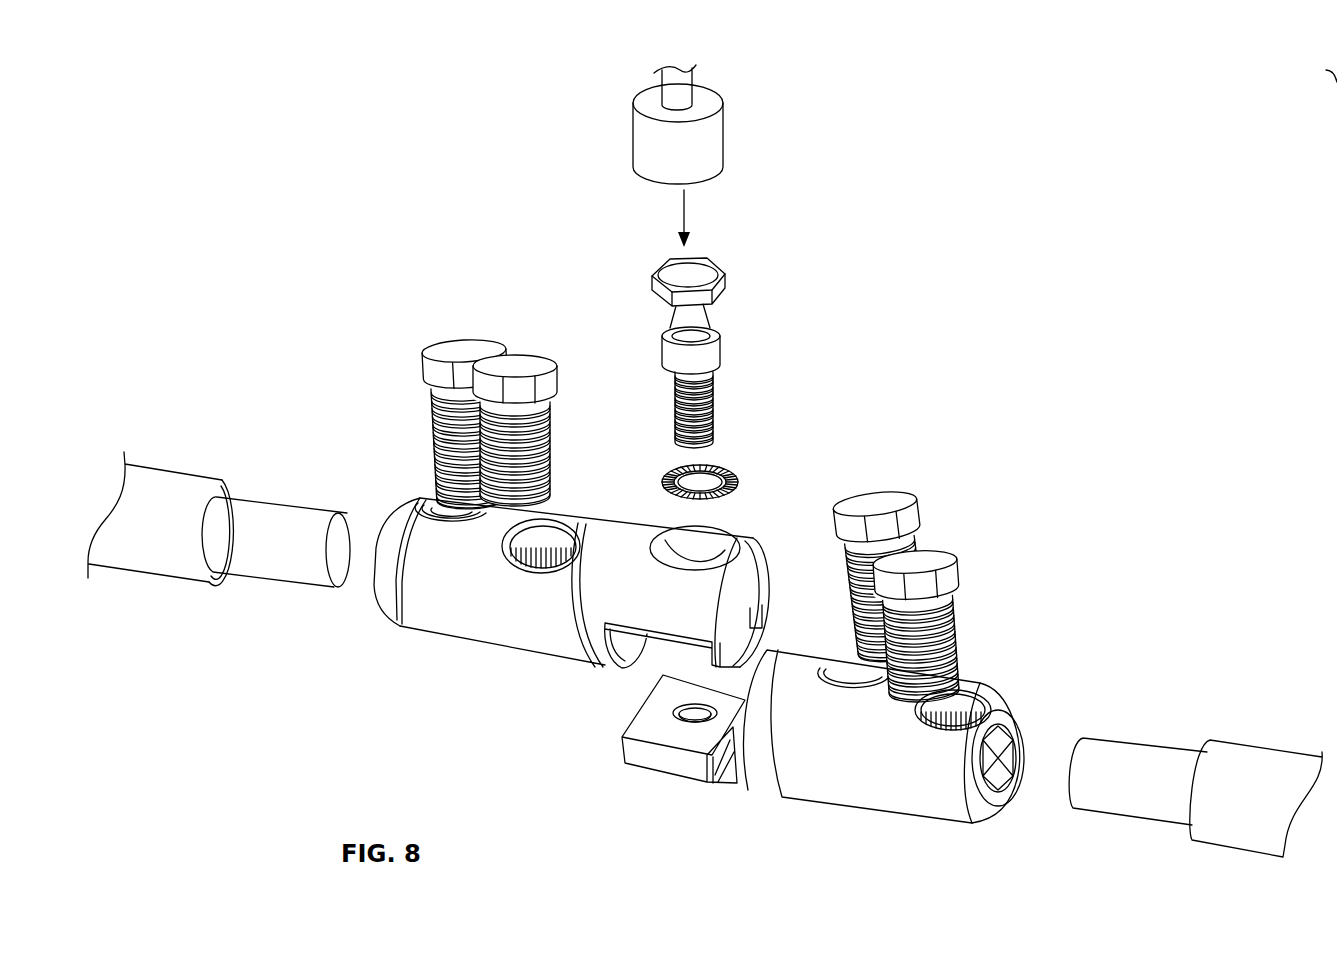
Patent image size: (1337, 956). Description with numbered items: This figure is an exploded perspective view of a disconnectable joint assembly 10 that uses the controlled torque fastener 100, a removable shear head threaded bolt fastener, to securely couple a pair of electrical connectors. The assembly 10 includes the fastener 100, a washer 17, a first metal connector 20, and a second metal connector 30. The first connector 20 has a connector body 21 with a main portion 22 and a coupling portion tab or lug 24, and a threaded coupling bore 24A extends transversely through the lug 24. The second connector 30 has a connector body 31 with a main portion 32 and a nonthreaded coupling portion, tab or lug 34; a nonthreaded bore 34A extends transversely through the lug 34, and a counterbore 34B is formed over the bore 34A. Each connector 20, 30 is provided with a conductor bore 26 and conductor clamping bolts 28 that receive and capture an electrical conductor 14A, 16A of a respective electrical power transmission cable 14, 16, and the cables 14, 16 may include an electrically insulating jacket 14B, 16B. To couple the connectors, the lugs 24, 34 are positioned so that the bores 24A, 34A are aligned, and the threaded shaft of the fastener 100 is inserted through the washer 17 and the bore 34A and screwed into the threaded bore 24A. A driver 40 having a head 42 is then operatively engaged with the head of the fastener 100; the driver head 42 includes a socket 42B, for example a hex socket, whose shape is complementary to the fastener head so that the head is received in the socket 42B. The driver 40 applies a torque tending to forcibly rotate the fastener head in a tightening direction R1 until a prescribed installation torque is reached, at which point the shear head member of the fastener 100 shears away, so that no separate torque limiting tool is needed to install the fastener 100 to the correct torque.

The disconnectable joint assembly 10 is at (1086, 202).
The electrical power transmission cable 14 is at (166, 582).
The electrical conductor 14A is at (288, 500).
The electrically insulating jacket 14B is at (180, 480).
The electrical power transmission cable 16 is at (1217, 744).
The electrical conductor 16A is at (1115, 735).
The electrically insulating jacket 16B is at (1255, 757).
The washer 17 is at (722, 466).
The first metal connector 20 is at (863, 830).
The connector body 21 is at (881, 816).
The main portion 22 is at (930, 815).
The coupling portion tab or lug 24 is at (665, 776).
The threaded coupling bore 24A is at (694, 706).
The conductor bore 26 is at (380, 503).
The conductor clamping bolts 28 is at (468, 340).
The second metal connector 30 is at (455, 660).
The connector body 31 is at (478, 650).
The main portion 32 is at (418, 630).
The nonthreaded coupling portion, tab or lug 34 is at (770, 566).
The nonthreaded bore 34A is at (672, 524).
The counterbore 34B is at (722, 546).
The driver 40 is at (599, 130).
The driver head 42 is at (633, 148).
The socket 42B is at (652, 190).
The controlled torque fastener 100 is at (730, 251).
The tightening direction R1 is at (712, 190).